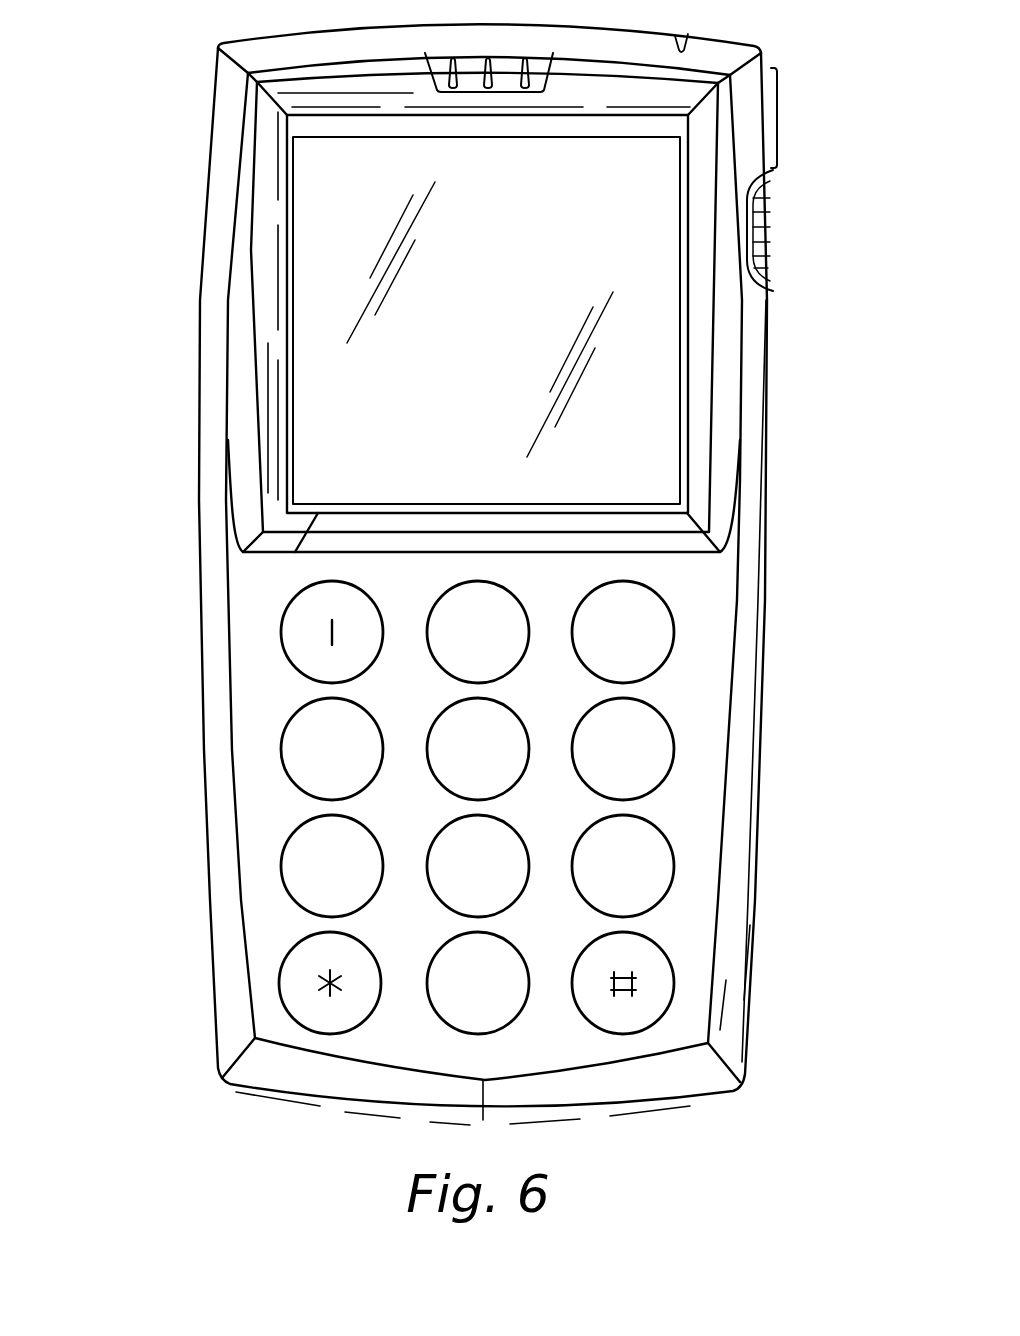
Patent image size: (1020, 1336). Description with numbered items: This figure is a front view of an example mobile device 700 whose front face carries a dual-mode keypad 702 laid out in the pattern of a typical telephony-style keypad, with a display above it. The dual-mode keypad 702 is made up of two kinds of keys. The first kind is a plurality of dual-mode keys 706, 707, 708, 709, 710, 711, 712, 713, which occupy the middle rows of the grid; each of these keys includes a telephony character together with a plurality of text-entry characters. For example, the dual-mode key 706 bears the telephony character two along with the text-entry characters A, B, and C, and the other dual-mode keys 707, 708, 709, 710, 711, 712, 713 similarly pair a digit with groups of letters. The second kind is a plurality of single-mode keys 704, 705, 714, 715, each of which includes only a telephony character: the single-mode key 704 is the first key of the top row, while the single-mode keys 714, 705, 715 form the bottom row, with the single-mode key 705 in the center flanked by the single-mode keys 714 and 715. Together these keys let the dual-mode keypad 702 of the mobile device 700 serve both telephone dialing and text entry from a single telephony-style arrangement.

The mobile device 700 is at (128, 162).
The dual-mode keypad 702 is at (256, 586).
The single-mode key 704 is at (281, 632).
The single-mode key 705 is at (431, 966).
The dual-mode key 706 is at (431, 615).
The dual-mode key 707 is at (675, 632).
The dual-mode key 708 is at (281, 749).
The dual-mode key 709 is at (431, 732).
The dual-mode key 710 is at (675, 749).
The dual-mode key 711 is at (431, 849).
The dual-mode key 712 is at (281, 866).
The dual-mode key 713 is at (675, 866).
The single-mode key 714 is at (279, 983).
The single-mode key 715 is at (675, 983).